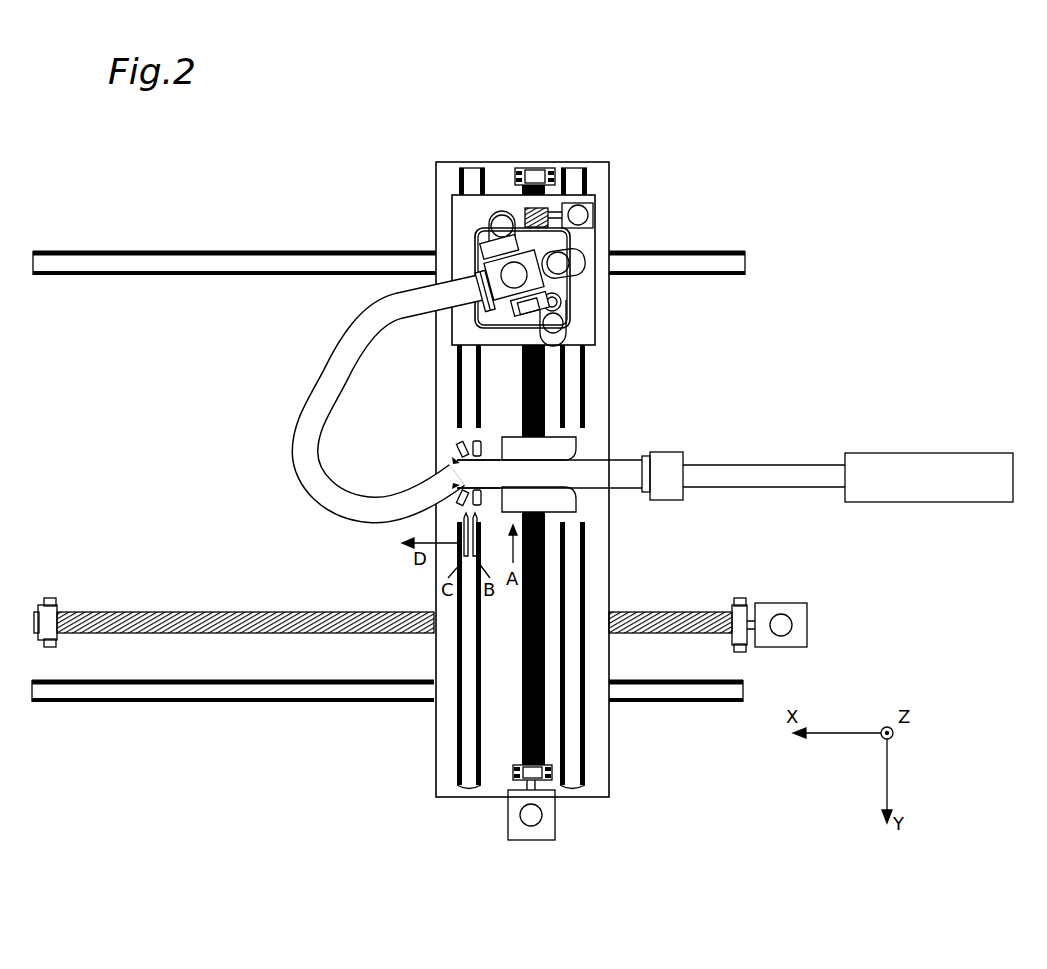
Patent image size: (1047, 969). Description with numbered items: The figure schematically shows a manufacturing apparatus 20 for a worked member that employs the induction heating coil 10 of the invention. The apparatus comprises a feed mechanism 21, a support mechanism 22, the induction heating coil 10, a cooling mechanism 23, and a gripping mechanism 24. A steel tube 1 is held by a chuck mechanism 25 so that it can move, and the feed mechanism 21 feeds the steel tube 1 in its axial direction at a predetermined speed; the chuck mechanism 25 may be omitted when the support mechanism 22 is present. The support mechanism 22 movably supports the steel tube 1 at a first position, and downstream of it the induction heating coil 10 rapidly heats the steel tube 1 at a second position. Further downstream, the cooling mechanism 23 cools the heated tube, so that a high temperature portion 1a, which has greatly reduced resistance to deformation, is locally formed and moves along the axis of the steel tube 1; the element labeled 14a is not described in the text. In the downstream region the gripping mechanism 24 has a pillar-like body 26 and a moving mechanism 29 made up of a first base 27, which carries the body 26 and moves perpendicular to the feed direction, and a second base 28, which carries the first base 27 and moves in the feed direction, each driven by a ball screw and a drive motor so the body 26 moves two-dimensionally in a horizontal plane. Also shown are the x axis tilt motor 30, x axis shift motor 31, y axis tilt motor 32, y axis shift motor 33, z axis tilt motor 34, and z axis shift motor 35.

The manufacturing apparatus 20 is at (786, 225).
The moving mechanism 29 is at (427, 185).
The second base 28 is at (458, 162).
The gripping mechanism 24 is at (484, 152).
The first base 27 is at (499, 195).
The y axis tilt motor 32 is at (489, 214).
The z axis shift motor 35 is at (594, 215).
The x axis tilt motor 30 is at (584, 260).
The z axis tilt motor 34 is at (568, 332).
The body 26 is at (505, 308).
The support mechanism 22 is at (583, 444).
The steel tube 1 is at (765, 463).
The high temperature portion 1a is at (470, 476).
The chuck mechanism 25 is at (667, 448).
The feed mechanism 21 is at (935, 453).
The cooling mechanism 23 is at (459, 447).
The induction heating coil 10 is at (479, 441).
The lower nozzle block 14a is at (483, 497).
The x axis shift motor 31 is at (783, 603).
The y axis shift motor 33 is at (556, 820).